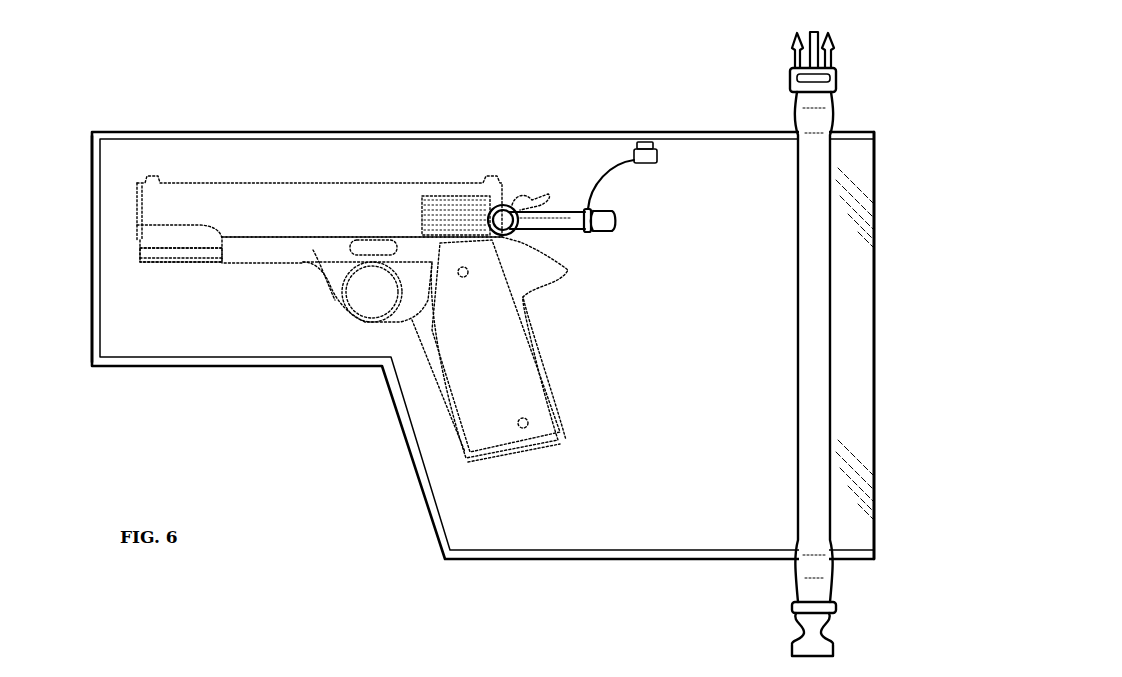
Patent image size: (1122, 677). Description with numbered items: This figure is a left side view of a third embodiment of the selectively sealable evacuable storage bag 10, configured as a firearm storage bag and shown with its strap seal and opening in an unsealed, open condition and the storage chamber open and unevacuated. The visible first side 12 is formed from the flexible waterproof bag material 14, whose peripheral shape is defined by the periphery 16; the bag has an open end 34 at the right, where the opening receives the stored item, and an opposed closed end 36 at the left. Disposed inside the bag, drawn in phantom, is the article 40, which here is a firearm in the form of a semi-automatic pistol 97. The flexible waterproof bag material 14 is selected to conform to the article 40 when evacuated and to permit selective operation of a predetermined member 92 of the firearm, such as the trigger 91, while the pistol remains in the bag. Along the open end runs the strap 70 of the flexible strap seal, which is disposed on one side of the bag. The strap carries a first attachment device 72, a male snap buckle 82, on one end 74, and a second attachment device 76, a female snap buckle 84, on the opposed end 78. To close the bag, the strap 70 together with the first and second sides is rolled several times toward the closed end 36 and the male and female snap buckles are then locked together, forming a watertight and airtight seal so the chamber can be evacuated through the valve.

The selectively sealable evacuable storage bag 10 is at (543, 100).
The first side 12 is at (353, 158).
The flexible waterproof bag material 14 is at (352, 274).
The periphery 16 is at (207, 132).
The open end 34 is at (874, 132).
The closed end 36 is at (92, 273).
The article 40 is at (211, 343).
The pistol 97 is at (276, 270).
The strap 70 is at (830, 370).
The first attachment device 72 is at (859, 39).
The male snap buckle 82 is at (832, 34).
The one end 74 is at (834, 100).
The second attachment device 76 is at (871, 645).
The female snap buckle 84 is at (834, 648).
The opposed end 78 is at (834, 586).
The trigger 91 is at (384, 295).
The predetermined member 92 is at (384, 297).